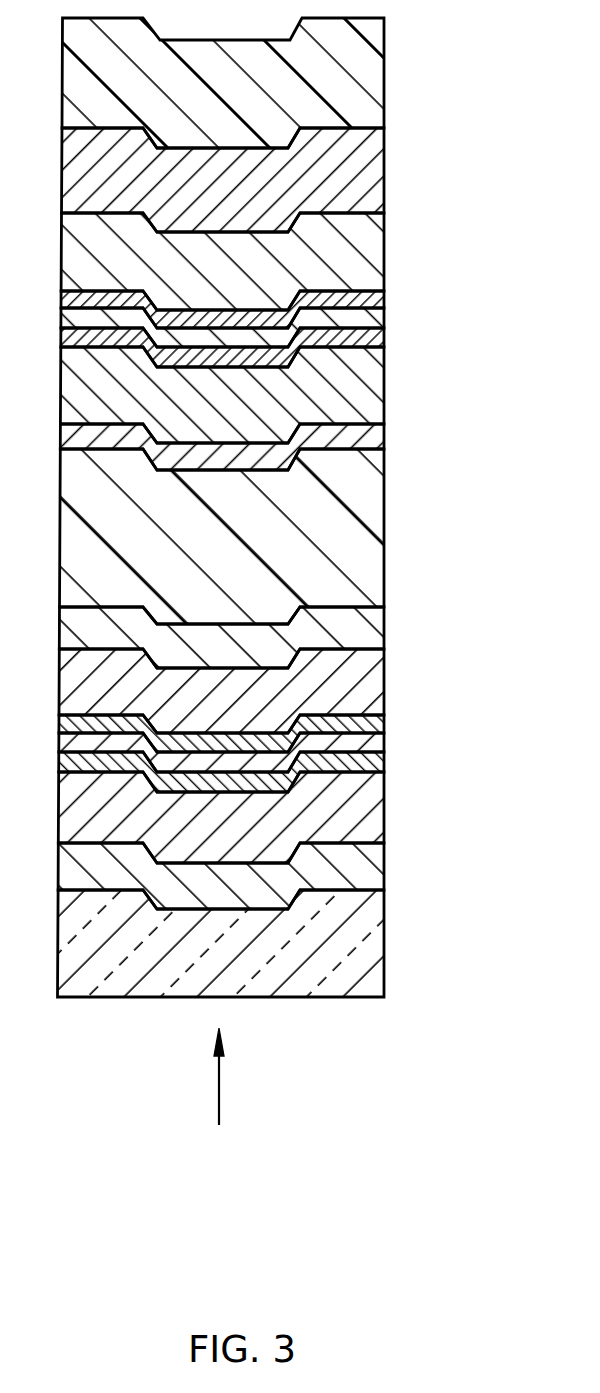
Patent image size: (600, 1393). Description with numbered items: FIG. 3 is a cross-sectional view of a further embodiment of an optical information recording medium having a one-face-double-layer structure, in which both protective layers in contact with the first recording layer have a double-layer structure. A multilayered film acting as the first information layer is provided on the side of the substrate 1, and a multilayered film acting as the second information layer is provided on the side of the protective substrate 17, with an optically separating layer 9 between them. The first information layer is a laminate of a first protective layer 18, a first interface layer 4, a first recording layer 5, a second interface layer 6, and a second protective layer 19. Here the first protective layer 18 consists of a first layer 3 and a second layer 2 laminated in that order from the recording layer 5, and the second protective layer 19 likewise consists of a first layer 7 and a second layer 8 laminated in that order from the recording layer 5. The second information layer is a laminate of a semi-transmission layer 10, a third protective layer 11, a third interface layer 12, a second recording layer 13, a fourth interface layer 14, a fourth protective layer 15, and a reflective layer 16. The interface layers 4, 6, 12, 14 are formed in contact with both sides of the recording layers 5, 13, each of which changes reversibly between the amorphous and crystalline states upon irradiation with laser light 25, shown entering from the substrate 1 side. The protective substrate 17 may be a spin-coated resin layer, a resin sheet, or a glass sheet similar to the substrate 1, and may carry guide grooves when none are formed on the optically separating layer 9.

The substrate 1 is at (380, 948).
The second layer of first protective layer 2 is at (267, 873).
The first layer of first protective layer 3 is at (380, 803).
The first interface layer 4 is at (385, 770).
The first recording layer 5 is at (385, 747).
The second interface layer 6 is at (385, 720).
The first layer of second protective layer 7 is at (378, 685).
The second layer of second protective layer 8 is at (380, 635).
The optically separating layer 9 is at (380, 542).
The semi-transmission layer 10 is at (385, 442).
The third protective layer 11 is at (380, 382).
The third interface layer 12 is at (385, 345).
The second recording layer 13 is at (385, 318).
The fourth interface layer 14 is at (385, 297).
The fourth protective layer 15 is at (380, 253).
The reflective layer 16 is at (385, 180).
The protective substrate 17 is at (385, 93).
The first protective layer 18 is at (298, 840).
The second protective layer 19 is at (298, 666).
The laser light 25 is at (219, 1098).